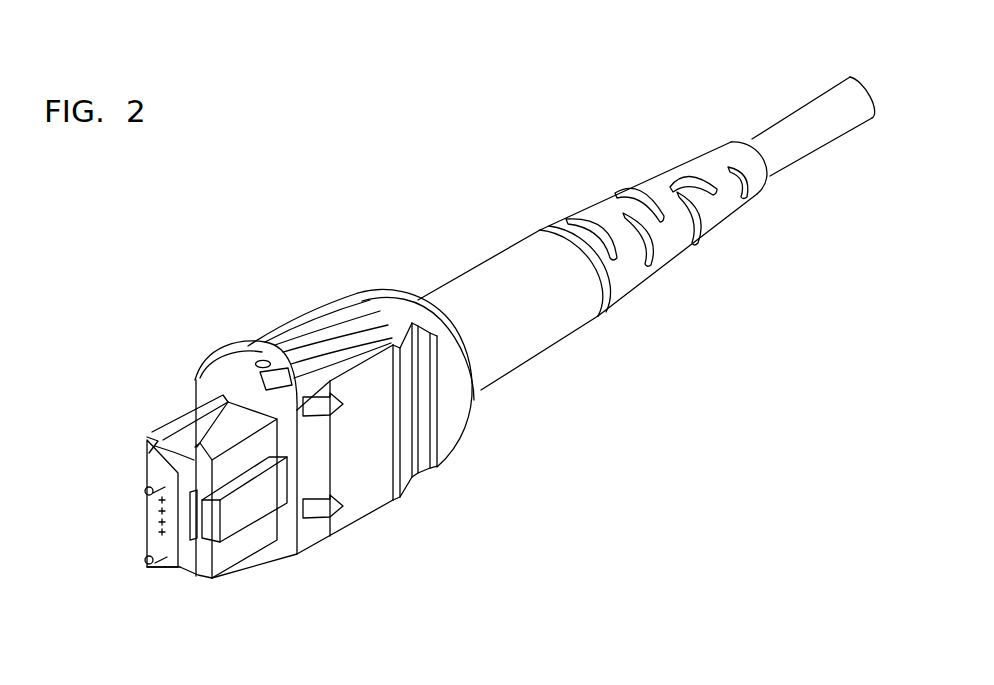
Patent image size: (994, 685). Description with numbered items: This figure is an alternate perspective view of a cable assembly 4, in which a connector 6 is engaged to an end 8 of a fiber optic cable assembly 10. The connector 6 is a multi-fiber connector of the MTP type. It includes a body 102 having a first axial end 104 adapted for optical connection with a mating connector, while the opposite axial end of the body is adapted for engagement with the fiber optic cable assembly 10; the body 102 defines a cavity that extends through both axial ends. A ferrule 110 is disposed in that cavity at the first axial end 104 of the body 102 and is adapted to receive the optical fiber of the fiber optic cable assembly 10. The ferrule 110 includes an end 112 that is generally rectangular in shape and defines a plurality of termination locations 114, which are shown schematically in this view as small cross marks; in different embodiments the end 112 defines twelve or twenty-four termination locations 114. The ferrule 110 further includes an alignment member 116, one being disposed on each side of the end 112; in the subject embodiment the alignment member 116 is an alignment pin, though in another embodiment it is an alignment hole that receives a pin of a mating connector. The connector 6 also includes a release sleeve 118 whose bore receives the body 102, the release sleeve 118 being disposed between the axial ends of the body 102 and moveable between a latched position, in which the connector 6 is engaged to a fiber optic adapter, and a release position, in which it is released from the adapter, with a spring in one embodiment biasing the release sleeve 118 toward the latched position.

The cable assembly 4 is at (333, 425).
The connector 6 is at (343, 280).
The end 8 is at (773, 183).
The fiber optic cable assembly 10 is at (787, 93).
The body 102 is at (178, 547).
The first axial end 104 is at (192, 432).
The ferrule 110 is at (168, 463).
The end 112 is at (152, 537).
The termination locations 114 is at (160, 513).
The alignment member 116 is at (150, 562).
The release sleeve 118 is at (352, 522).